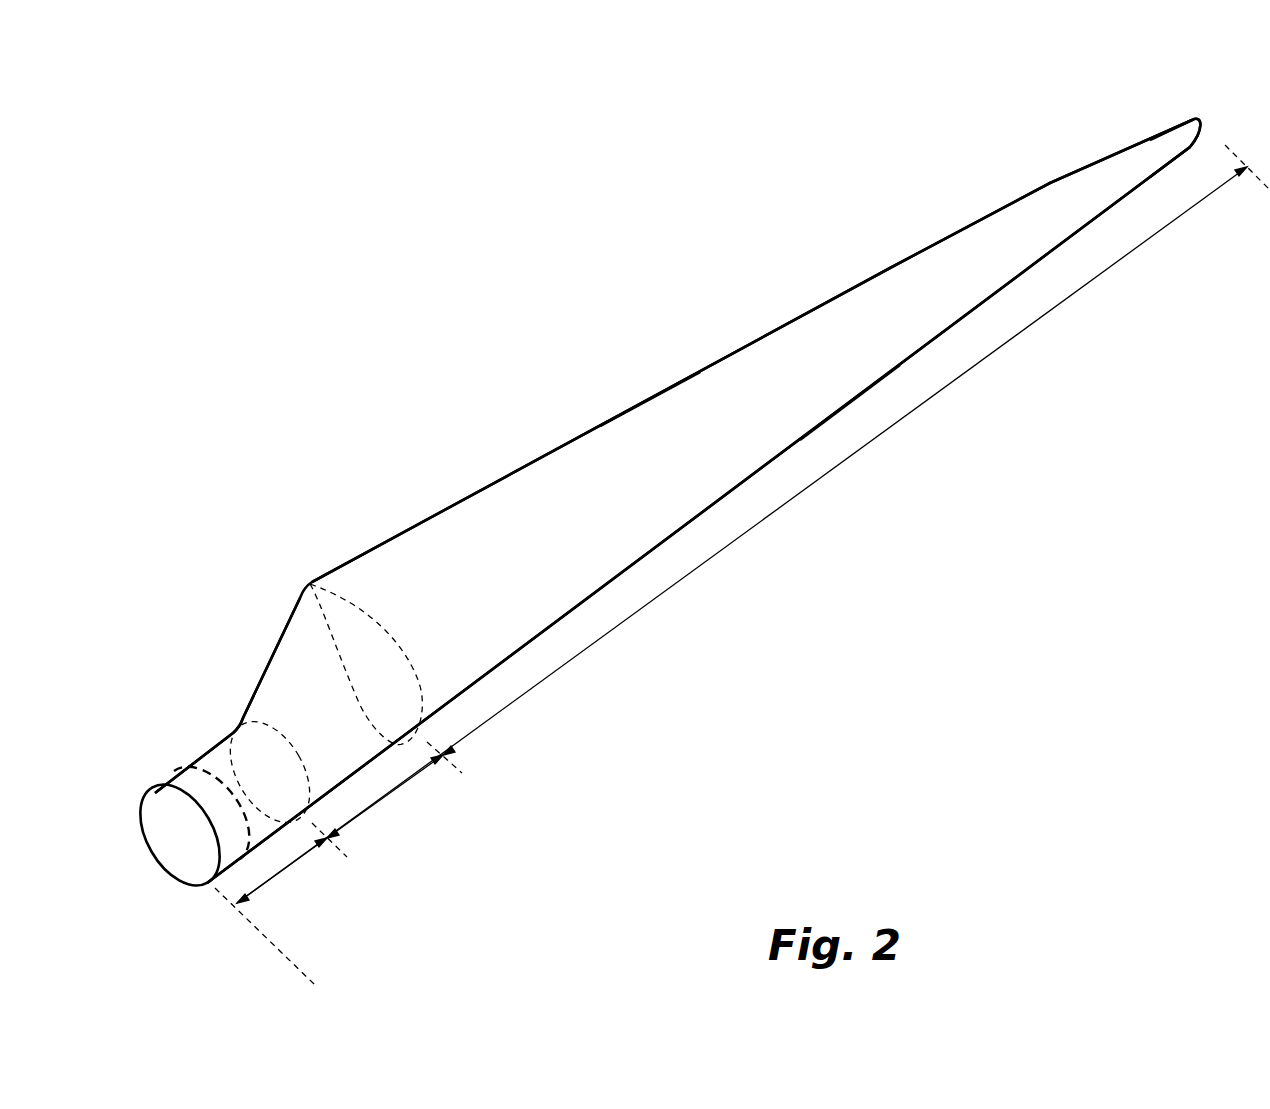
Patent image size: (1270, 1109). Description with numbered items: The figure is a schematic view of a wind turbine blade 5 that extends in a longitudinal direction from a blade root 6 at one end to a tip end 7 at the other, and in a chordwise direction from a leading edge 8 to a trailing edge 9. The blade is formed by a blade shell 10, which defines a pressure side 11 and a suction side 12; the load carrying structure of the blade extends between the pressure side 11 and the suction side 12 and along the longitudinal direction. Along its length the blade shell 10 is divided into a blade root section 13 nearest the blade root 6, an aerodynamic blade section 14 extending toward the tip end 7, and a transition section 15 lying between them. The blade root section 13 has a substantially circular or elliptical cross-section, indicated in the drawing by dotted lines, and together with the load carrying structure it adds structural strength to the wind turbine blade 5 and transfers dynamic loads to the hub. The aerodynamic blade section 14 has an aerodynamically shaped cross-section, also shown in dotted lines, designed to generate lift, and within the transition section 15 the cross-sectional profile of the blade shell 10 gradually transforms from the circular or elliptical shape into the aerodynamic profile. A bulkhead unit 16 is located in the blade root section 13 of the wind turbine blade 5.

The wind turbine blade 5 is at (477, 362).
The blade root 6 is at (184, 814).
The tip end 7 is at (1200, 117).
The leading edge 8 is at (880, 382).
The trailing edge 9 is at (890, 268).
The blade shell 10 is at (650, 417).
The pressure side 11 is at (815, 402).
The suction side 12 is at (333, 638).
The blade root section 13 is at (283, 873).
The aerodynamic blade section 14 is at (763, 518).
The transition section 15 is at (390, 795).
The bulkhead unit 16 is at (195, 762).